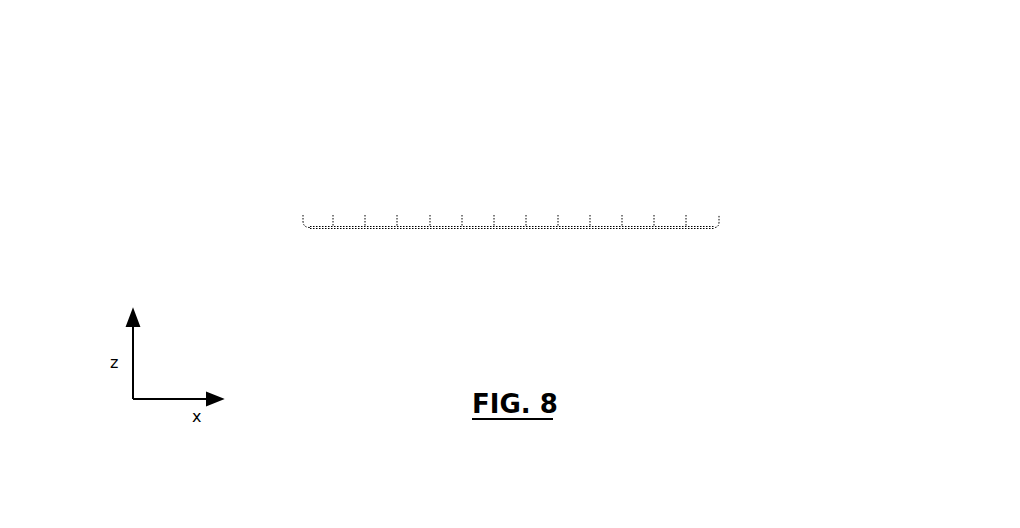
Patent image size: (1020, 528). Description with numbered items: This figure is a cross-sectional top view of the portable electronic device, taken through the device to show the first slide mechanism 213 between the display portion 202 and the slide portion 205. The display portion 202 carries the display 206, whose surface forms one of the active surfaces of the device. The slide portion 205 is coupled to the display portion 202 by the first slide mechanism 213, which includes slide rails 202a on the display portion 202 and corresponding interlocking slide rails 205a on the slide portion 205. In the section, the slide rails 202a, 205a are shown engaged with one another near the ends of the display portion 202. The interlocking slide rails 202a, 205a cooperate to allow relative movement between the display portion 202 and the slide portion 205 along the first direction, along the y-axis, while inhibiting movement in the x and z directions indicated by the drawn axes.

The display portion 202 is at (310, 208).
The slide rails 202a is at (363, 188).
The slide portion 205 is at (320, 135).
The interlocking slide rails 205a is at (362, 200).
The display 206 is at (405, 243).
The first slide mechanism 213 is at (350, 208).